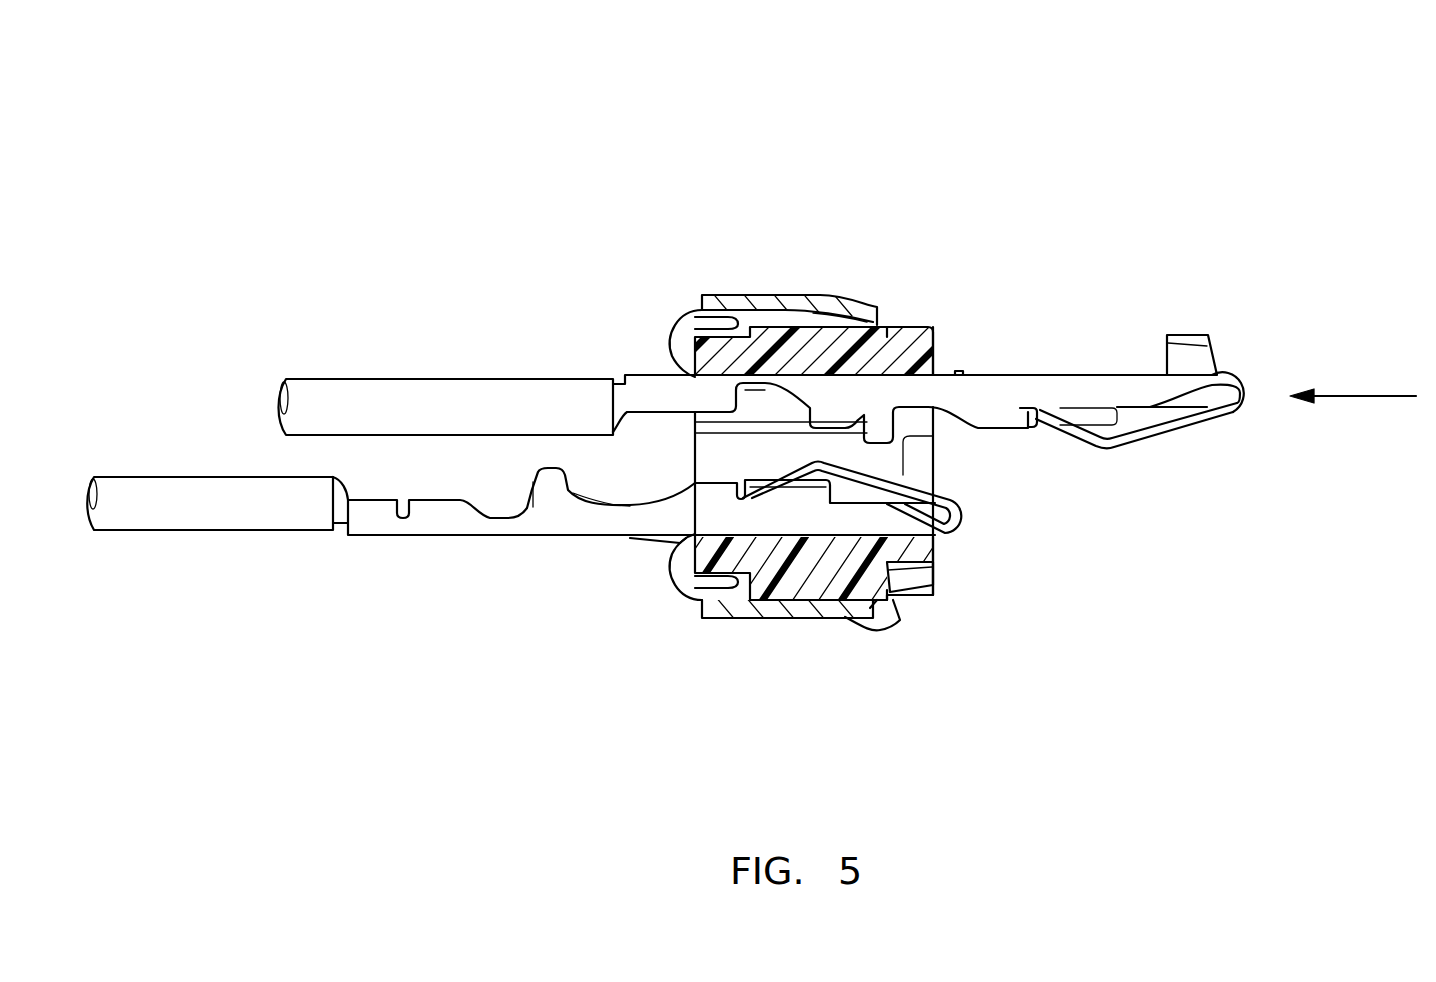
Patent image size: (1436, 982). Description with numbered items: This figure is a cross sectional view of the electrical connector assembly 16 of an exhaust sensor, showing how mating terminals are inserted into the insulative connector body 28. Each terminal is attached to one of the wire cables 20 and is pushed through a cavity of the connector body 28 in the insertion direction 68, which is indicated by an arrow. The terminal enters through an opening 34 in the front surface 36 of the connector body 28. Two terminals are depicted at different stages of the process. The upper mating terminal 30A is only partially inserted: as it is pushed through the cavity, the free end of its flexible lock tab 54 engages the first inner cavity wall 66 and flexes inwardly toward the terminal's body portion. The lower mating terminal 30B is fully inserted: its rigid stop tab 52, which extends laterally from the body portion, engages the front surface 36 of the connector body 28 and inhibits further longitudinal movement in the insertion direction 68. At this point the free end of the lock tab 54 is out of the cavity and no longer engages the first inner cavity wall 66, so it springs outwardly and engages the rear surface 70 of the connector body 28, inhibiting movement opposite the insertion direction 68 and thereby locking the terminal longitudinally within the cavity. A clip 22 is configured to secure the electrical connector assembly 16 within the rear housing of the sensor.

The electrical connector assembly 16 is at (696, 147).
The wire cables 20 is at (407, 392).
The clip 22 is at (808, 296).
The connector body 28 is at (803, 328).
The upper mating terminal 30A is at (1040, 376).
The lower mating terminal 30B is at (560, 522).
The opening 34 is at (760, 411).
The front surface 36 is at (892, 326).
The stop tab 52 is at (1185, 336).
The lock tab 54 is at (962, 372).
The first inner cavity wall 66 is at (920, 326).
The insertion direction 68 is at (1365, 395).
The rear surface 70 is at (697, 318).